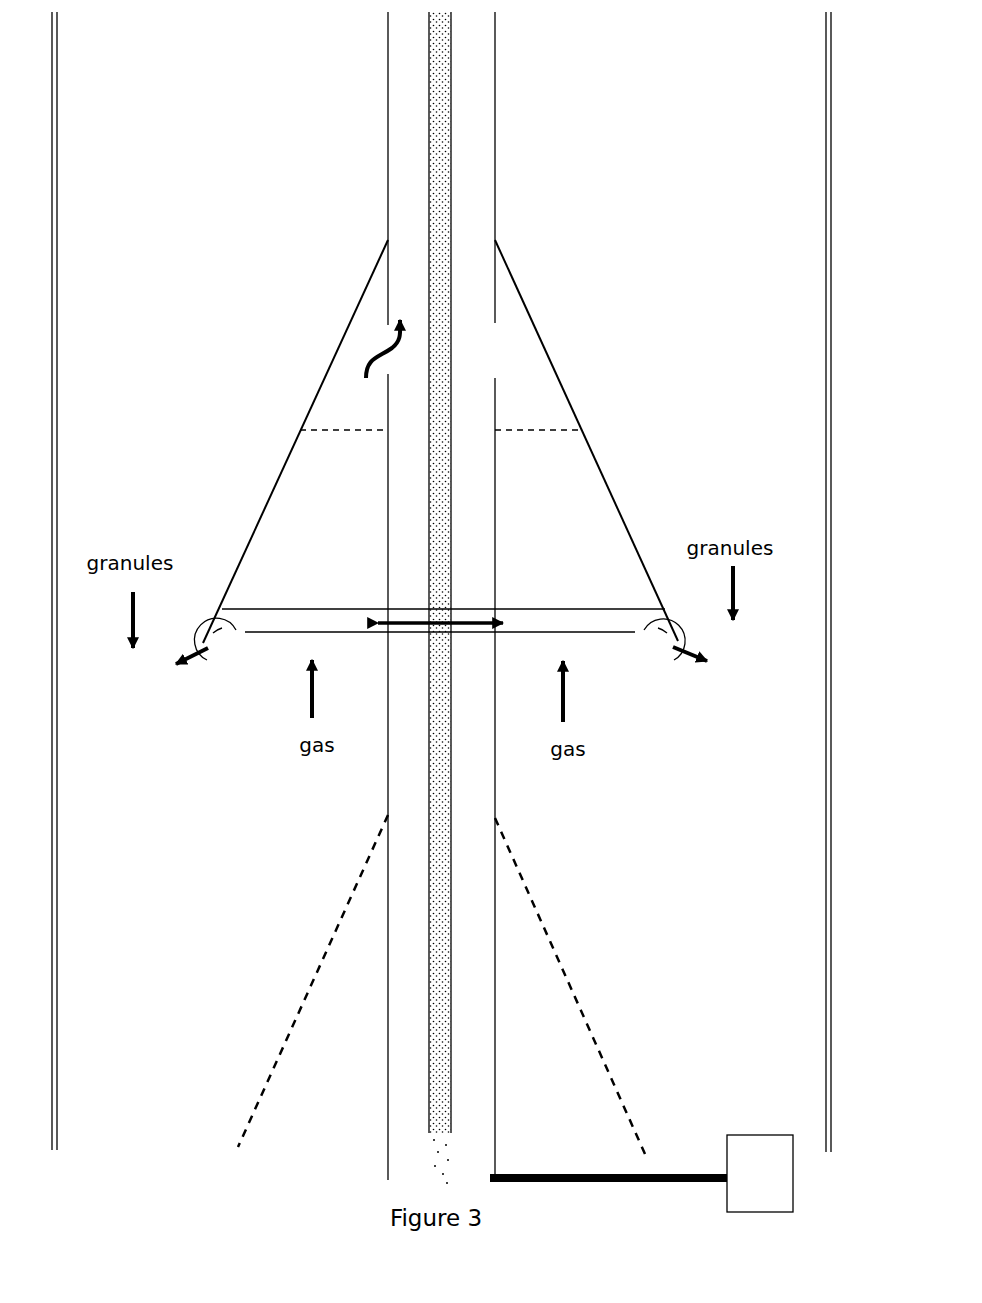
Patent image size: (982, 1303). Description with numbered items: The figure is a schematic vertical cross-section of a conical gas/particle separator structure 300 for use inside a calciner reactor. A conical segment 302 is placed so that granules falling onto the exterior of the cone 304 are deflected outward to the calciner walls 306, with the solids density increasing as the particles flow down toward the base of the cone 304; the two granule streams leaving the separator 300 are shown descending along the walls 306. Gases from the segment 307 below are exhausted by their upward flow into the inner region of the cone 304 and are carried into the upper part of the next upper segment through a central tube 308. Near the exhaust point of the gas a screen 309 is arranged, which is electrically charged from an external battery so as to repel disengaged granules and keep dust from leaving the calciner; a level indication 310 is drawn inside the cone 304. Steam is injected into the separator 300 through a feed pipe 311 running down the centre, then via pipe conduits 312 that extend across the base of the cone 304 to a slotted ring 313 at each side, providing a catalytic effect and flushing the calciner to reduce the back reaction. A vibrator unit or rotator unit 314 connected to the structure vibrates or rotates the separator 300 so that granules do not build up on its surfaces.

The separator 300 is at (259, 135).
The conical segment 302 is at (239, 321).
The cone 304 is at (249, 526).
The calciner walls 306 is at (823, 257).
The lower reactor section 307 is at (211, 922).
The tube 308 is at (395, 195).
The screen 309 is at (386, 328).
The granule bed level 310 is at (530, 427).
The feed pipe 311 is at (445, 568).
The pipe conduits 312 is at (247, 606).
The slotted ring 313 is at (237, 692).
The vibrator unit or rotator unit 314 is at (749, 1130).